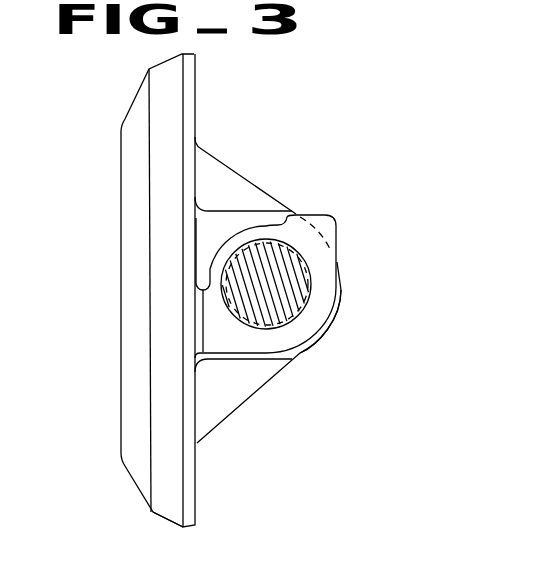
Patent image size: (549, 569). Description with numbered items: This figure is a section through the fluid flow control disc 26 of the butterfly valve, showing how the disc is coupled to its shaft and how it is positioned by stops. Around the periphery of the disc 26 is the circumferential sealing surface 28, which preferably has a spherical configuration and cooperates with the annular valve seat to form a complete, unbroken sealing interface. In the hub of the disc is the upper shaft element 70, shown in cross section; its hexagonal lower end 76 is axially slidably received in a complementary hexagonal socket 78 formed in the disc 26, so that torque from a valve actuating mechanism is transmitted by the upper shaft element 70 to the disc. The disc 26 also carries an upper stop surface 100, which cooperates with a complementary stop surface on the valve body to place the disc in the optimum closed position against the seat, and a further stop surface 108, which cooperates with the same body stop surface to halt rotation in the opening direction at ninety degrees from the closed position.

The fluid flow control disc 26 is at (121, 160).
The circumferential sealing surface 28 is at (170, 519).
The upper shaft element 70 is at (297, 264).
The hexagonal lower end 76 is at (327, 334).
The hexagonal socket 78 is at (312, 295).
The upper stop surface 100 is at (203, 334).
The stop surface 108 is at (307, 215).